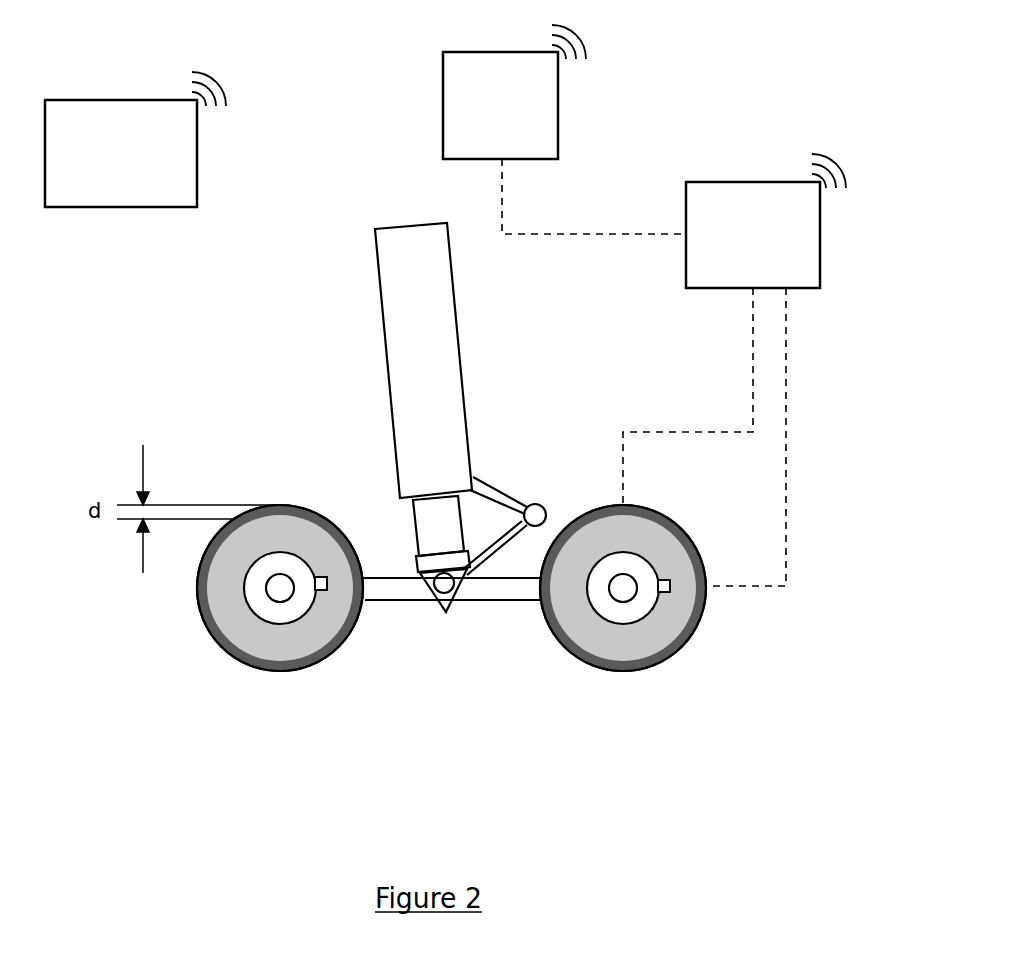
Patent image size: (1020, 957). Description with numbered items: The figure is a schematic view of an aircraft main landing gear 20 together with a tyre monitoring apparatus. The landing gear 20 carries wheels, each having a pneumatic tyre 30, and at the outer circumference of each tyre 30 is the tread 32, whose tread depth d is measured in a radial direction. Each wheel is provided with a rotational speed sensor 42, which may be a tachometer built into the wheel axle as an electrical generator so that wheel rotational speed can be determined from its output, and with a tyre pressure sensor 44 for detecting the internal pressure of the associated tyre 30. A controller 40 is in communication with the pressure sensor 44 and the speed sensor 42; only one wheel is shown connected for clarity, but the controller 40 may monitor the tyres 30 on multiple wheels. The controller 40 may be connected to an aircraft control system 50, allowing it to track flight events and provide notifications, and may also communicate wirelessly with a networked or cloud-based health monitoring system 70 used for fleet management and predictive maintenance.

The aircraft main landing gear 20 is at (360, 360).
The pneumatic tyre 30 is at (257, 637).
The tread 32 is at (197, 590).
The controller 40 is at (820, 232).
The rotational speed sensor 42 is at (280, 592).
The tyre pressure sensor 44 is at (395, 578).
The aircraft control system 50 is at (443, 98).
The health monitoring system 70 is at (97, 207).